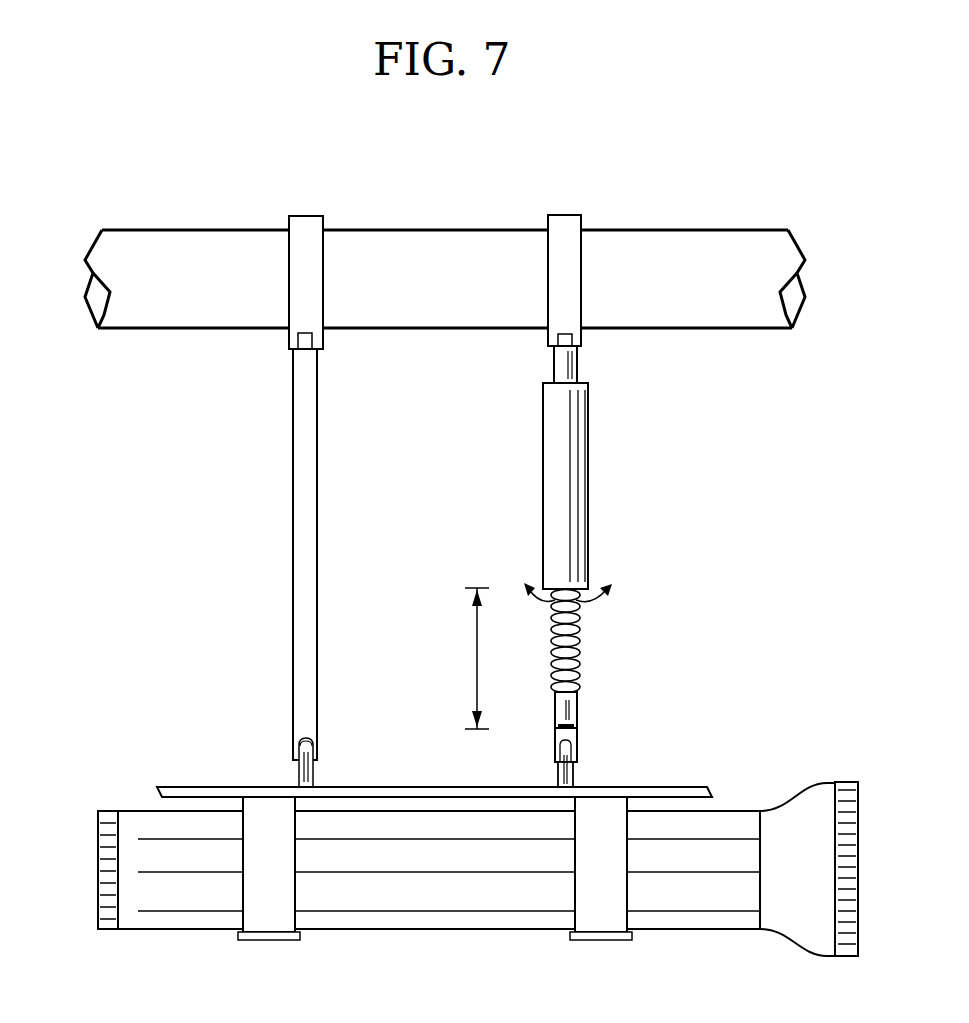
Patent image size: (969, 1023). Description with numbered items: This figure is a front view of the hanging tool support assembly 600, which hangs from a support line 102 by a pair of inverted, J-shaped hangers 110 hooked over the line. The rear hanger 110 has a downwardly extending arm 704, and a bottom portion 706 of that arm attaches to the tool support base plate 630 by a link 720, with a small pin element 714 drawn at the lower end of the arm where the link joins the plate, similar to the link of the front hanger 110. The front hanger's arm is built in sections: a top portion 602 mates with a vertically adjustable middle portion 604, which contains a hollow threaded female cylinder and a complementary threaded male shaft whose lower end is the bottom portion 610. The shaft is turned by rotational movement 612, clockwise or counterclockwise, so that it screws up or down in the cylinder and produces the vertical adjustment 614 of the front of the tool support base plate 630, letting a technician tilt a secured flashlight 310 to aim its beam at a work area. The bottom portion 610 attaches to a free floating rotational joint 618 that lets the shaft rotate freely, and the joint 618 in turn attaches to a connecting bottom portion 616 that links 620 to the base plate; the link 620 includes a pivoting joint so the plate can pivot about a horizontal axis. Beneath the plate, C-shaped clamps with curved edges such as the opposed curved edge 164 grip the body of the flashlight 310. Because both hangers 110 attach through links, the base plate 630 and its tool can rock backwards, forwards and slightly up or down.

The support line 102 is at (618, 230).
The inverted J-shaped hanger 110 is at (307, 215).
The downwardly extending arm 704 is at (298, 462).
The bottom portion of downwardly extending arm 706 is at (295, 745).
The pin 714 is at (312, 740).
The link 720 is at (298, 770).
The hanging tool support assembly 600 is at (178, 519).
The top portion 602 is at (552, 363).
The vertically adjustable middle portion 604 is at (553, 515).
The bottom portion of male shaft 610 is at (580, 660).
The rotational movement 612 is at (598, 604).
The vertical adjustment 614 is at (475, 670).
The free floating rotational joint 618 is at (577, 727).
The connecting bottom portion 616 is at (578, 752).
The link 620 is at (557, 778).
The tool support base plate 630 is at (160, 790).
The flashlight 310 is at (797, 783).
The opposed curved edge 164 is at (240, 935).